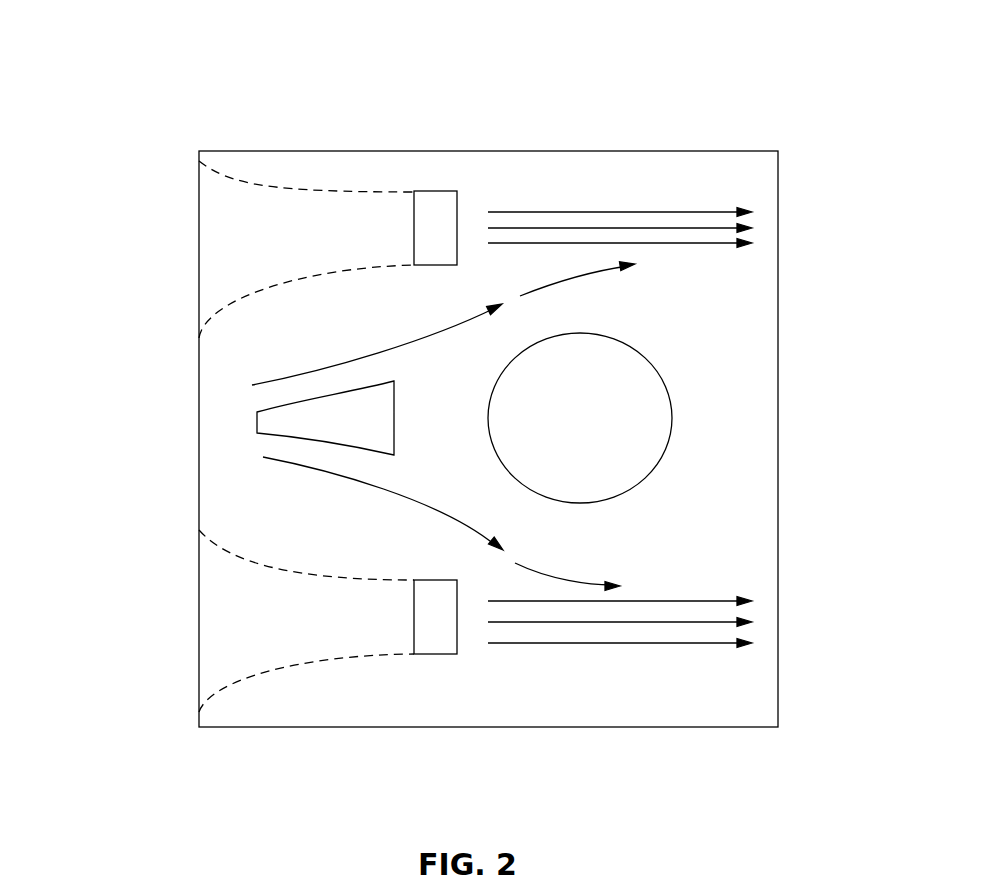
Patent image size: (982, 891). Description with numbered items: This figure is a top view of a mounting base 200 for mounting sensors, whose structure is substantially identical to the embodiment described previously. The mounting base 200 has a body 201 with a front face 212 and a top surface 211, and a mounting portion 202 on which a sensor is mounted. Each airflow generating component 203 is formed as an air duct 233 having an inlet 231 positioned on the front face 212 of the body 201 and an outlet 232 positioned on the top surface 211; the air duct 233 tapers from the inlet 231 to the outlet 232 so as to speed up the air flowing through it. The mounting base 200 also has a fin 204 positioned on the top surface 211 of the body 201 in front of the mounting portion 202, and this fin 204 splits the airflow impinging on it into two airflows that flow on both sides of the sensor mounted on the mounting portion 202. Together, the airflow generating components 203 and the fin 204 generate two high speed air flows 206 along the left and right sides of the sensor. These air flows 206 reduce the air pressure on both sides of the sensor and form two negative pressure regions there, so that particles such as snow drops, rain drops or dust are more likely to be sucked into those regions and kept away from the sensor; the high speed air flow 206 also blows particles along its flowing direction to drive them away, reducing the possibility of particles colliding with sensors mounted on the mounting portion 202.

The mounting base 200 is at (150, 148).
The body 201 is at (556, 172).
The mounting portion 202 is at (604, 442).
The airflow generating component 203 is at (355, 225).
The fin 204 is at (259, 418).
The high speed air flow 206 is at (612, 240).
The top surface 211 is at (708, 392).
The front face 212 is at (199, 487).
The inlet 231 is at (199, 232).
The outlet 232 is at (436, 245).
The air duct 233 is at (300, 247).